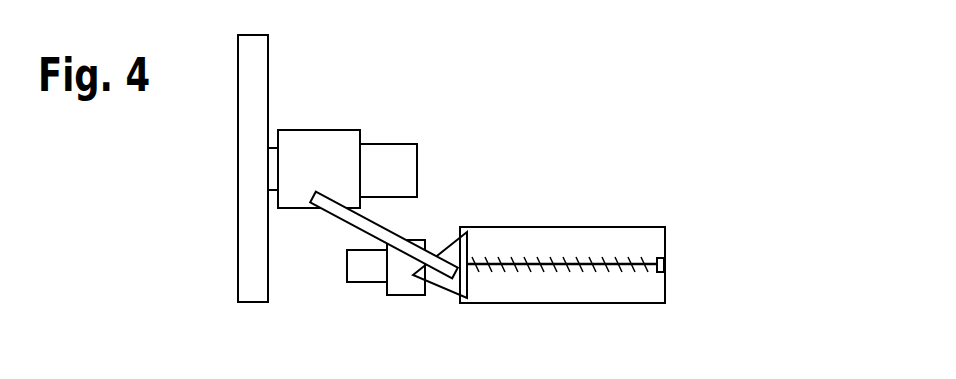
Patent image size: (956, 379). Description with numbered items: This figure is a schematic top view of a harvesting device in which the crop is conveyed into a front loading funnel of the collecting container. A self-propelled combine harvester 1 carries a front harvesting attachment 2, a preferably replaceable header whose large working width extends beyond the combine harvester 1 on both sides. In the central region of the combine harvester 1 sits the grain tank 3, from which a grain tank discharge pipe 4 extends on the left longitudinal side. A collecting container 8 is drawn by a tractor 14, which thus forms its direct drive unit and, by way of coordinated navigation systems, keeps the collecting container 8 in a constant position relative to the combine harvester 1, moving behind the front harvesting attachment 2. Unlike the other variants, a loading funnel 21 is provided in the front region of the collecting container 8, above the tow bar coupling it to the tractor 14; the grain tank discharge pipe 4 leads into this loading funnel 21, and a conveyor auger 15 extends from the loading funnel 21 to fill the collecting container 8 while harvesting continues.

The self-propelled combine harvester 1 is at (342, 111).
The front harvesting attachment 2 is at (253, 141).
The grain tank 3 is at (305, 128).
The grain tank discharge pipe 4 is at (343, 210).
The collecting container 8 is at (608, 225).
The tractor 14 is at (374, 273).
The conveyor auger 15 is at (561, 263).
The loading funnel 21 is at (443, 252).